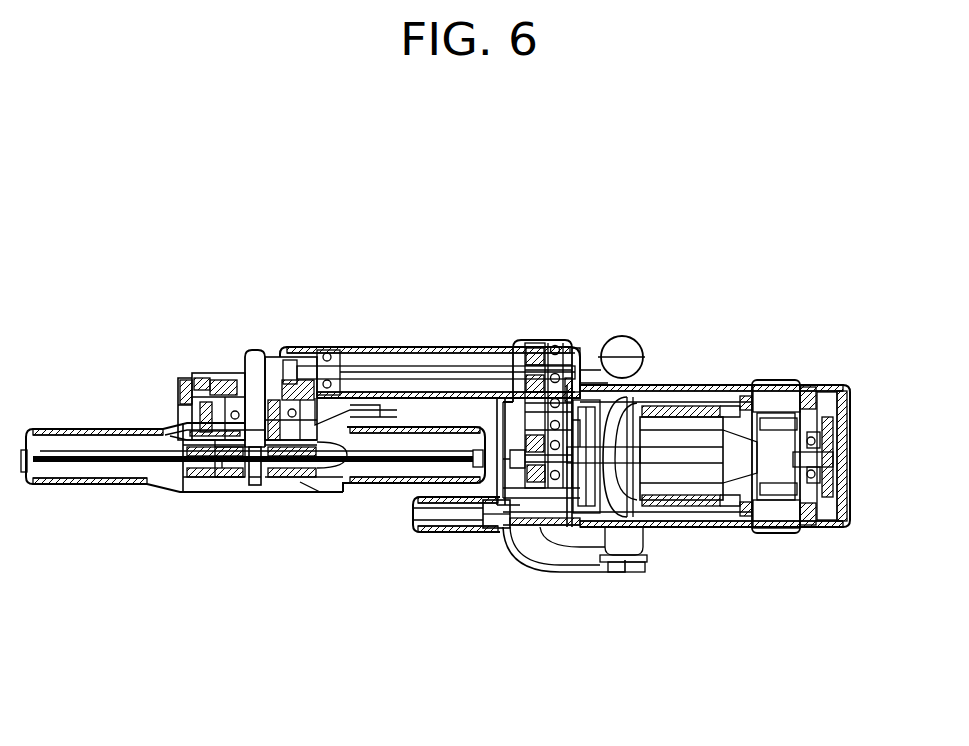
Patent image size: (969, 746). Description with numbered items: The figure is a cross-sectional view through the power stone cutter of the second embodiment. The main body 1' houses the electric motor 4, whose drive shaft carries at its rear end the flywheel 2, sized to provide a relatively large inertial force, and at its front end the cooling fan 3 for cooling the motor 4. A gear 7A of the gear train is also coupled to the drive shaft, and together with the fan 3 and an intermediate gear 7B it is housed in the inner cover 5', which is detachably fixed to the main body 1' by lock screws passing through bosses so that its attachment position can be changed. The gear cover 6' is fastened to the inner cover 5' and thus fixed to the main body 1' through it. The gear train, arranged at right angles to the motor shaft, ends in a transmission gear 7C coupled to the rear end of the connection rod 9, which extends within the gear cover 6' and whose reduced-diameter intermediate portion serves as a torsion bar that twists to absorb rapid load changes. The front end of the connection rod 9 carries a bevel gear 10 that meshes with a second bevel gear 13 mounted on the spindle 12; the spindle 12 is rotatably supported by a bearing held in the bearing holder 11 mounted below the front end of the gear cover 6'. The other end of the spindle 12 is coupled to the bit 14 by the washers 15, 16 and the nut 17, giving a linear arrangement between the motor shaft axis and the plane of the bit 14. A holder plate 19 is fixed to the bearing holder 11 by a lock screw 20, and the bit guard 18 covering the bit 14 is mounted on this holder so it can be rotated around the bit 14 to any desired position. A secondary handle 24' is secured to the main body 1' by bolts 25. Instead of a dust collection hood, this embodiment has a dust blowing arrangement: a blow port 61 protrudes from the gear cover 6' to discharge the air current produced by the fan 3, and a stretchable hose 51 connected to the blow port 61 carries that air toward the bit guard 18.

The main body 1' is at (715, 411).
The flywheel 2 is at (832, 392).
The cooling fan 3 is at (637, 386).
The electric motor 4 is at (677, 480).
The inner cover 5' is at (613, 366).
The gear cover 6' is at (547, 336).
The gear 7A is at (528, 525).
The intermediate gear 7B is at (535, 410).
The transmission gear 7C is at (552, 340).
The connection rod 9 is at (415, 368).
The bevel gear 10 is at (307, 347).
The bearing holder 11 is at (190, 408).
The spindle 12 is at (248, 492).
The second bevel gear 13 is at (220, 370).
The bit 14 is at (60, 429).
The washer 15 is at (345, 490).
The washer 16 is at (182, 492).
The nut 17 is at (227, 492).
The bit guard 18 is at (60, 484).
The holder plate 19 is at (312, 490).
The lock screw 20 is at (198, 440).
The secondary handle 24' is at (573, 590).
The bolt 25 is at (645, 565).
The hose 51 is at (417, 535).
The blow port 61 is at (495, 532).